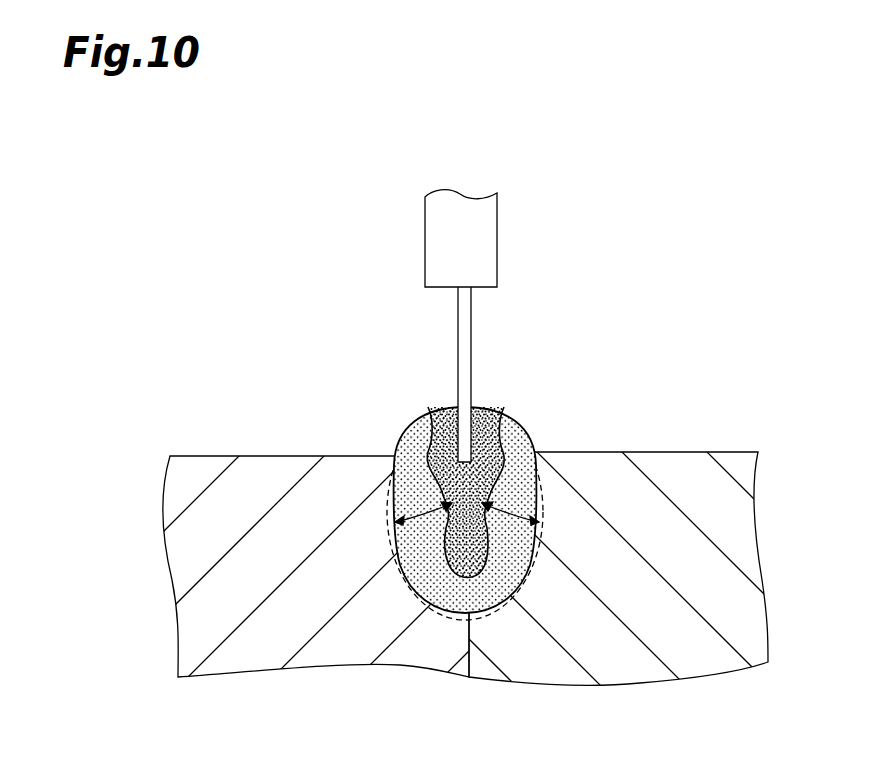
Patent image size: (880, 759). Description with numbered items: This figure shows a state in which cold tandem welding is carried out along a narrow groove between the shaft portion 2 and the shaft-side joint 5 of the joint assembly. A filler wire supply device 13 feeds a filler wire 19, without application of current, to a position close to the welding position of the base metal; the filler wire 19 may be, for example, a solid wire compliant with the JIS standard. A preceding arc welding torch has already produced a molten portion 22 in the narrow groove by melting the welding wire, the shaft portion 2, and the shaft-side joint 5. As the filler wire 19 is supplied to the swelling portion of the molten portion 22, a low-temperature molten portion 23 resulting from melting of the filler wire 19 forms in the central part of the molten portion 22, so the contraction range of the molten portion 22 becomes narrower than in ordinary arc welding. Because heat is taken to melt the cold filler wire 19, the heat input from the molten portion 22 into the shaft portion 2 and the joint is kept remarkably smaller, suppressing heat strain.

The filler wire supply device 13 is at (497, 237).
The filler wire 19 is at (456, 335).
The molten portion 22 is at (413, 472).
The low-temperature molten portion 23 is at (470, 483).
The shaft-side joint 5 is at (258, 655).
The shaft portion 2 is at (573, 672).